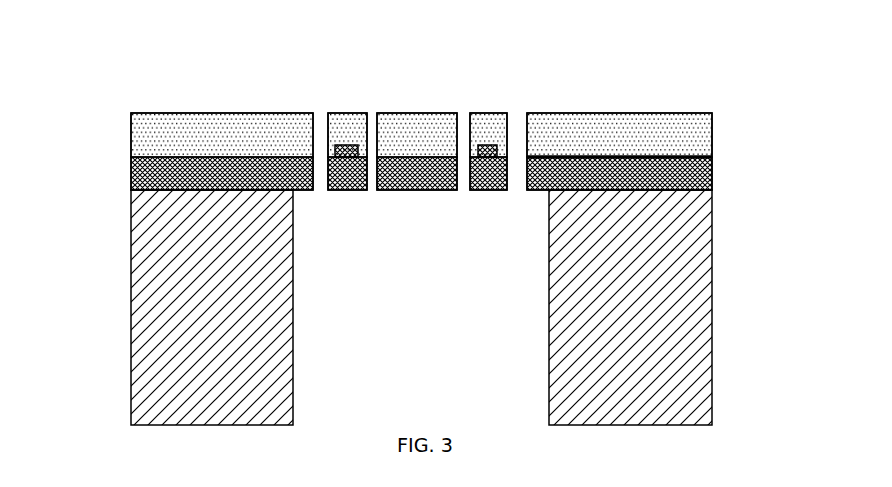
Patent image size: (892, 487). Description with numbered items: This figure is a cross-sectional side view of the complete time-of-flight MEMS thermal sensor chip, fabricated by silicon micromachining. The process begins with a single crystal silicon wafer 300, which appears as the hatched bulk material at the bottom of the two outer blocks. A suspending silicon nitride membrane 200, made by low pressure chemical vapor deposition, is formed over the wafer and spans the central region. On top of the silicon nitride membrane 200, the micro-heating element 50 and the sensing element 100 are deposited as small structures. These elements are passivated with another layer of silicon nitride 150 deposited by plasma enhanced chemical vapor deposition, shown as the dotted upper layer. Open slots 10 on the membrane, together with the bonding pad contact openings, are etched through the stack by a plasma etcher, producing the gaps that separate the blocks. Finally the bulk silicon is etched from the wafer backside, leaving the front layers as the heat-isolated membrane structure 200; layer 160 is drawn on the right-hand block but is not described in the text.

The open slots 10 is at (322, 128).
The micro-heating element 50 is at (357, 145).
The sensing element 100 is at (492, 145).
The silicon nitride passivation layer 150 is at (193, 125).
The second bonding layer 160 is at (625, 176).
The silicon nitride membrane 200 is at (413, 197).
The single crystal silicon wafer 300 is at (167, 283).